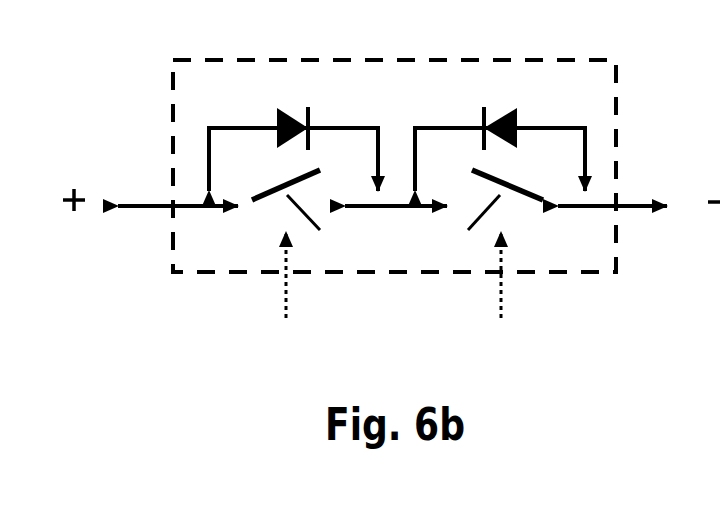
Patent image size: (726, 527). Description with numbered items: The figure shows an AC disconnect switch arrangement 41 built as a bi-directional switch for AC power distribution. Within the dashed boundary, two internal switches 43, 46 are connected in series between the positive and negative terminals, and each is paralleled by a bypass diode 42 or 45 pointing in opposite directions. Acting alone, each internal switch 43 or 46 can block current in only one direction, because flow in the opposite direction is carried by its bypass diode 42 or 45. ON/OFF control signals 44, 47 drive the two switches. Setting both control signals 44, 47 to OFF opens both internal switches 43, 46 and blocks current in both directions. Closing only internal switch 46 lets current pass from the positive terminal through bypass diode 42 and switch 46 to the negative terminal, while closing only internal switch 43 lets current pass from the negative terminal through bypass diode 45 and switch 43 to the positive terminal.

The AC disconnect switch arrangement 41 is at (632, 86).
The bypass diode 42 is at (270, 112).
The internal switch 43 is at (304, 219).
The ON/OFF control signal 44 is at (275, 297).
The bypass diode 45 is at (530, 113).
The internal switch 46 is at (487, 214).
The ON/OFF control signal 47 is at (523, 297).